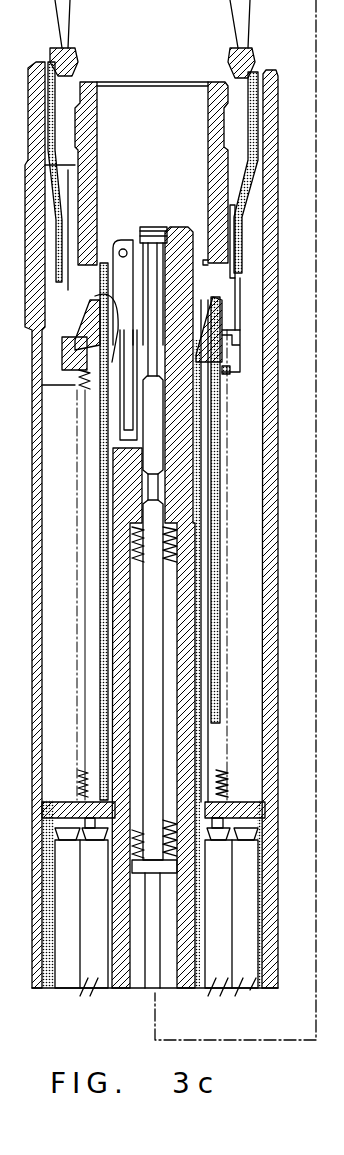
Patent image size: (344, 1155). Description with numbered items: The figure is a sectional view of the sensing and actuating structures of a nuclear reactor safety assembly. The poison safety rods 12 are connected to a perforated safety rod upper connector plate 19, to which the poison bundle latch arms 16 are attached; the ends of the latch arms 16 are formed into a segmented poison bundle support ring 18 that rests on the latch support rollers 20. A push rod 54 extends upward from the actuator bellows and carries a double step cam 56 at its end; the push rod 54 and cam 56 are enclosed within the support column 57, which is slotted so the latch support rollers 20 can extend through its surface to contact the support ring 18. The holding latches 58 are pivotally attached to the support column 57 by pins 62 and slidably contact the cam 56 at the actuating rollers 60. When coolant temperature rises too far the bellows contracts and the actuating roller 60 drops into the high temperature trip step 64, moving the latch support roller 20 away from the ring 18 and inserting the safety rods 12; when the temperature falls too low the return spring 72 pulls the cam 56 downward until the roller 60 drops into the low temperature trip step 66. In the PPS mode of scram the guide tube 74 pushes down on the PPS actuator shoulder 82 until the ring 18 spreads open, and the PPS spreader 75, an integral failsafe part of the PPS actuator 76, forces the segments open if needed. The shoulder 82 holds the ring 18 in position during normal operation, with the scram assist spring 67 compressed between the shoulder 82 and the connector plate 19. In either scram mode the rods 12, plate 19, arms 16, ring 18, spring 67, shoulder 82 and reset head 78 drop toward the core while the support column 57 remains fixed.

The poison safety rod 12 is at (258, 975).
The poison bundle latch arm 16 is at (208, 740).
The poison bundle support ring 18 is at (218, 312).
The safety rod upper connector plate 19 is at (270, 807).
The latch support roller 20 is at (84, 294).
The push rod 54 is at (143, 978).
The double step cam 56 is at (157, 450).
The support column 57 is at (187, 513).
The holding latch 58 is at (108, 280).
The actuating roller 60 is at (135, 432).
The pin 62 is at (125, 249).
The high temperature trip step 64 is at (130, 488).
The low temperature trip step 66 is at (148, 378).
The scram assist spring 67 is at (228, 376).
The return spring 72 is at (168, 548).
The guide tube 74 is at (240, 255).
The PPS spreader 75 is at (232, 270).
The PPS actuator 76 is at (238, 295).
The reset head 78 is at (232, 135).
The PPS actuator shoulder 82 is at (235, 350).